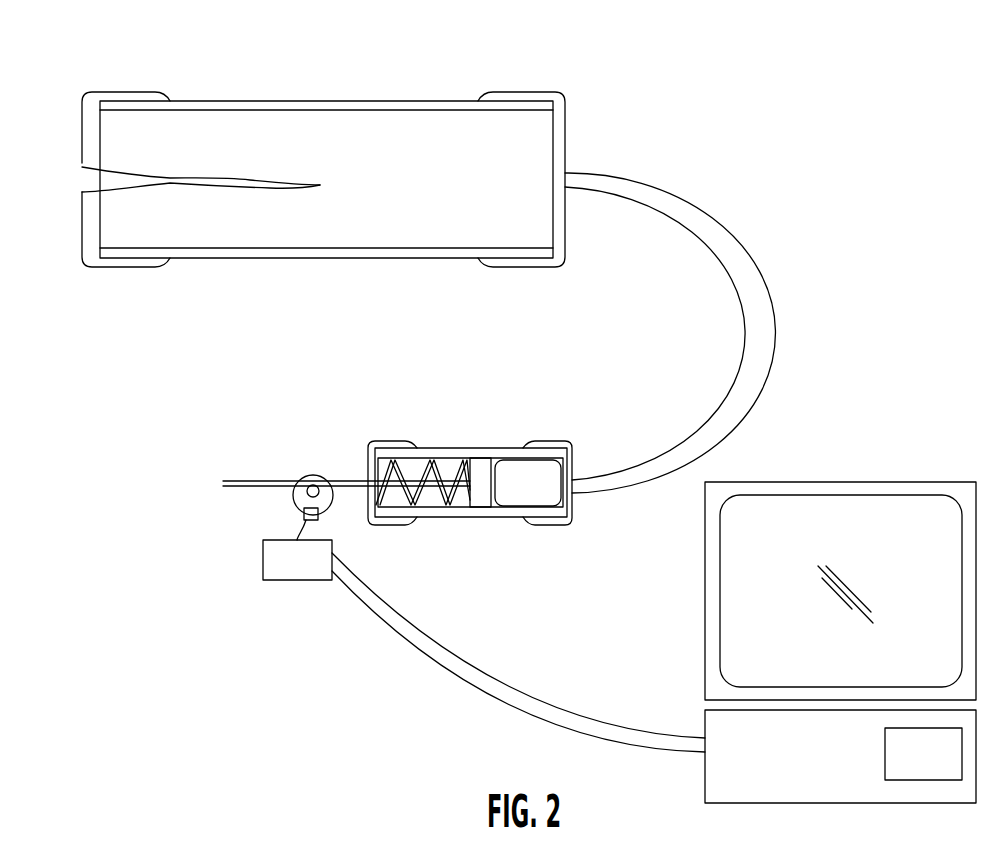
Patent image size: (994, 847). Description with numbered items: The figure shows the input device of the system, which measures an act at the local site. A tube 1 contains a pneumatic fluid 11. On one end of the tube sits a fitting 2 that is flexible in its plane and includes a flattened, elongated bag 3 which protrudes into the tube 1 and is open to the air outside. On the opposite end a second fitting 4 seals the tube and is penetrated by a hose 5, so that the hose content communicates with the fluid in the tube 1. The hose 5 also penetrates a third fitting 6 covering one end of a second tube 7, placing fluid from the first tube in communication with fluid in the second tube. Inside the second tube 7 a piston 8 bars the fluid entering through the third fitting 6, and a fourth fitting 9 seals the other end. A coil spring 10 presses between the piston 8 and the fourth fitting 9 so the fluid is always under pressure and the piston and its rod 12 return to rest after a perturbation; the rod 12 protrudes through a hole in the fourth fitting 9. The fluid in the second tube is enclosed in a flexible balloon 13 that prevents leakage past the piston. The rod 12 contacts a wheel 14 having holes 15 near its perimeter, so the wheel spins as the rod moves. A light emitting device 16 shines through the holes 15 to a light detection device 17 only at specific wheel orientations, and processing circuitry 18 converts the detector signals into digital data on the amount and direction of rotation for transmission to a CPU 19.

The tube 1 is at (333, 99).
The fitting 2 is at (117, 92).
The flattened, elongated bag 3 is at (165, 250).
The second fitting 4 is at (567, 128).
The hose 5 is at (737, 247).
The third fitting 6 is at (570, 447).
The second tube 7 is at (473, 448).
The piston 8 is at (480, 495).
The fourth fitting 9 is at (397, 442).
The coil spring 10 is at (422, 498).
The pneumatic fluid 11 is at (362, 249).
The rod 12 is at (347, 476).
The flexible balloon 13 is at (532, 508).
The wheel 14 is at (302, 473).
The holes 15 is at (293, 503).
The light emitting device 16 is at (318, 520).
The light detection device 17 is at (303, 512).
The processing circuitry 18 is at (283, 580).
The CPU 19 is at (705, 781).